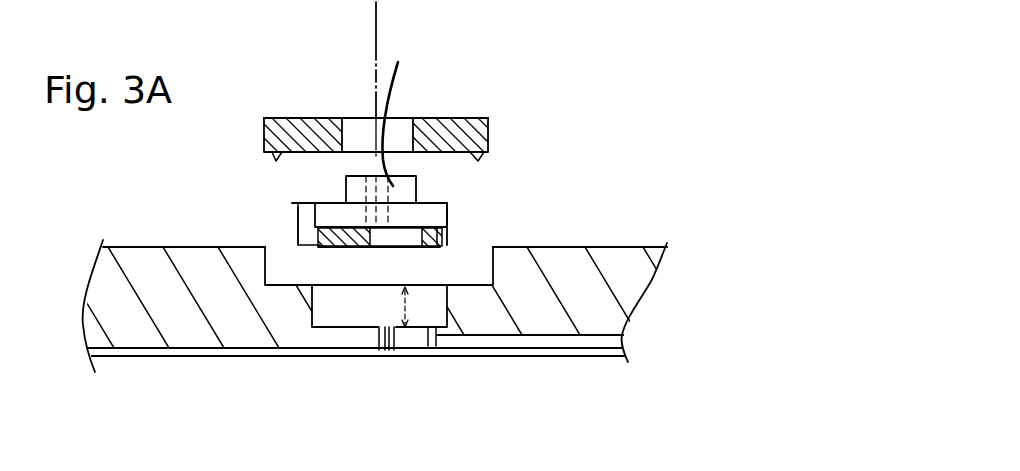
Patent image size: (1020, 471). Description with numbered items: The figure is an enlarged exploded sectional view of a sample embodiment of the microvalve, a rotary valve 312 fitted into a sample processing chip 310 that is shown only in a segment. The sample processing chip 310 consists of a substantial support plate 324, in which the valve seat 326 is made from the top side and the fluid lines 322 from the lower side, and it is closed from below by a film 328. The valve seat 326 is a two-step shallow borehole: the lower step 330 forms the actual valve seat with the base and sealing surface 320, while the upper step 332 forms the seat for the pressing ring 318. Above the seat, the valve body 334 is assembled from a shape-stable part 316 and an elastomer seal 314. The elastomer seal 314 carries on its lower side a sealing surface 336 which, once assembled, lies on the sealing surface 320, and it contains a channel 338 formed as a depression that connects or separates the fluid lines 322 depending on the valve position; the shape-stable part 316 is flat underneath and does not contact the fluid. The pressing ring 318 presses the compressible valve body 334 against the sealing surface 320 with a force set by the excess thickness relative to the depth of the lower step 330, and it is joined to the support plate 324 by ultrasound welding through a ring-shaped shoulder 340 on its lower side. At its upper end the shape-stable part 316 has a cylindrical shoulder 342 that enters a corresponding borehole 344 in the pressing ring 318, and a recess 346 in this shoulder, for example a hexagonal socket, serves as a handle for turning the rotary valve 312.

The sample processing chip 310 is at (655, 236).
The rotary valve 312 is at (510, 85).
The elastomer seal 314 is at (440, 246).
The shape-stable part 316 is at (452, 196).
The pressing ring 318 is at (488, 130).
The sealing surface 320 is at (361, 334).
The fluid lines 322 is at (607, 345).
The support plate 324 is at (640, 273).
The valve seat 326 is at (301, 249).
The film 328 is at (598, 355).
The lower step 330 is at (327, 323).
The upper step 332 is at (468, 268).
The valve body 334 is at (280, 201).
The sealing surface 336 is at (347, 248).
The channel 338 is at (447, 216).
The ring-shaped shoulder 340 is at (488, 160).
The cylindrical shoulder 342 is at (347, 182).
The borehole 344 is at (355, 117).
The recess 346 is at (412, 99).